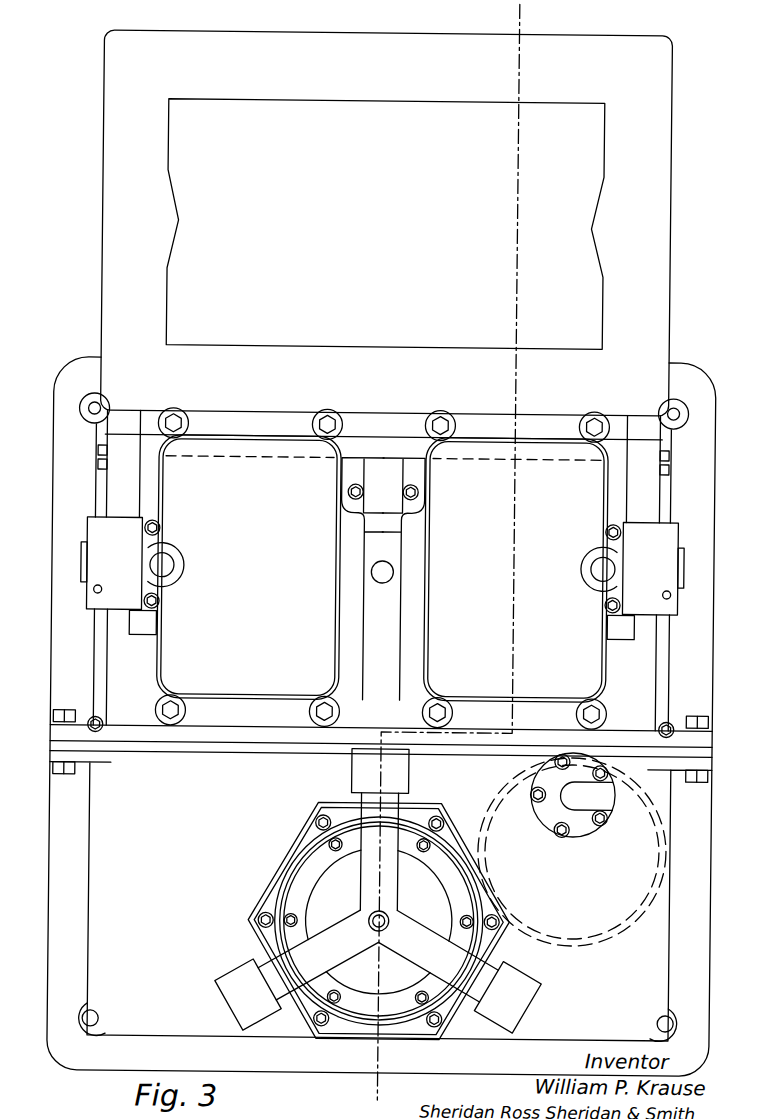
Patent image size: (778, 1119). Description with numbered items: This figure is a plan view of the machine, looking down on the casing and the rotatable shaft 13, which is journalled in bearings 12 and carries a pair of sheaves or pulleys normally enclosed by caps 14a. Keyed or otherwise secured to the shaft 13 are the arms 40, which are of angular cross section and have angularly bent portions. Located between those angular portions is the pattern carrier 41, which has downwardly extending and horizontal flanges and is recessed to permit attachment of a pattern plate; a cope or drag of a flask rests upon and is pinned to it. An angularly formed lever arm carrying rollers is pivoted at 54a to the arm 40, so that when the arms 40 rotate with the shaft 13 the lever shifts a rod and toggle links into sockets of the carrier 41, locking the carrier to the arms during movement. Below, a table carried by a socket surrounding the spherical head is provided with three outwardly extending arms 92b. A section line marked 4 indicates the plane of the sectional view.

The section line 4- 4 is at (503, 15).
The bearings 12 is at (150, 549).
The rotatable shaft 13 is at (84, 560).
The caps 14a is at (383, 569).
The arms 40 is at (382, 570).
The pattern carrier 41 is at (660, 174).
The pivot 54a is at (100, 476).
The outwardly extending arms 92b is at (398, 838).